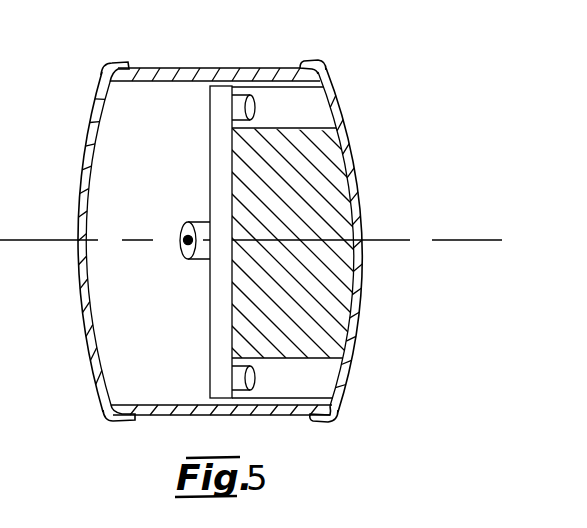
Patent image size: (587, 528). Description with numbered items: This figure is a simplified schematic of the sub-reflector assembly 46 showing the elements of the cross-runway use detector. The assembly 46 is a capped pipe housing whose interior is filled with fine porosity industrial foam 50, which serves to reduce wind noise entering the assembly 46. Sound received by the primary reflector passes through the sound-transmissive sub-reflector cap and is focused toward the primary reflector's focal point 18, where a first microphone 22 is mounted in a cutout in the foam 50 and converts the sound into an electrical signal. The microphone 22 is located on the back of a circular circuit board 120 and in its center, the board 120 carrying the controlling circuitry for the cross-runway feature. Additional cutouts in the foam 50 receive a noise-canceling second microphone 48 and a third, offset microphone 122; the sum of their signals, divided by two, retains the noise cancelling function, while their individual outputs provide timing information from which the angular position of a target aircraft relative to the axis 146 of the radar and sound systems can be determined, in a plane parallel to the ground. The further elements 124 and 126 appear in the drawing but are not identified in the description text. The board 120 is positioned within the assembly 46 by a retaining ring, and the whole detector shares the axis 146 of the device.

The focal point 18 is at (184, 241).
The microphone 22 is at (205, 260).
The sub-reflector assembly 46 is at (280, 72).
The second microphone 48 is at (256, 106).
The foam 50 is at (322, 172).
The circuit board 120 is at (218, 86).
The third microphone 122 is at (257, 378).
The upper spacer region 124 is at (327, 117).
The lower spacer region 126 is at (335, 368).
The axis 146 is at (447, 239).